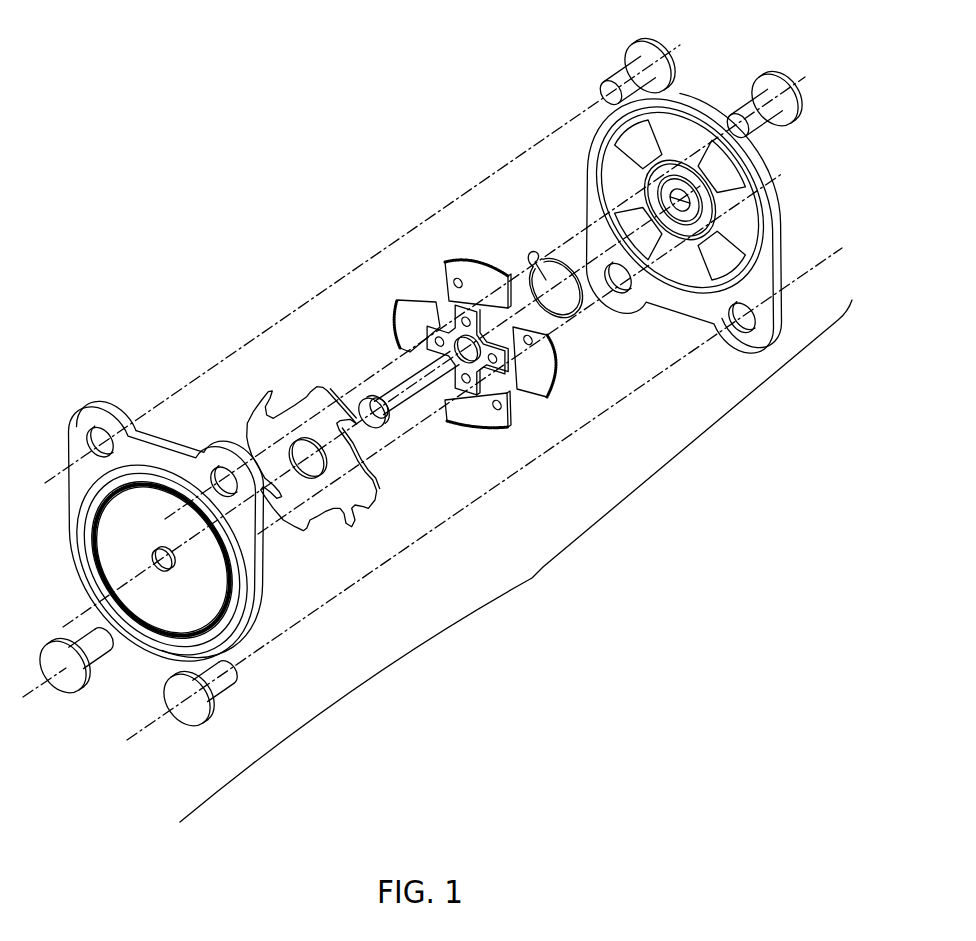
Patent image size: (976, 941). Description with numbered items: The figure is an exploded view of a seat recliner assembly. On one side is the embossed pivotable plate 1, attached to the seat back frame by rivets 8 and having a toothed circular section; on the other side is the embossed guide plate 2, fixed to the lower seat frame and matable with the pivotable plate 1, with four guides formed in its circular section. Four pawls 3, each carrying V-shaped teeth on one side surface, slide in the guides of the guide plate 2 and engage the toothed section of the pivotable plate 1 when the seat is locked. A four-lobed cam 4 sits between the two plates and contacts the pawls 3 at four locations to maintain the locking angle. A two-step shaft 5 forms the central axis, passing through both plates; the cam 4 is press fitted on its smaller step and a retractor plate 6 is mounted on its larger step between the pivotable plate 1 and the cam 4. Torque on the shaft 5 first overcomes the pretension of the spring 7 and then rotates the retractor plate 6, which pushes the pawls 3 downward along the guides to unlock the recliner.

The pivotable plate 1 is at (142, 447).
The guide plate 2 is at (688, 318).
The pawls 3 is at (481, 422).
The cam 4 is at (450, 325).
The shaft 5 is at (428, 402).
The retractor plate 6 is at (362, 503).
The spring 7 is at (572, 310).
The rivets 8 is at (623, 72).